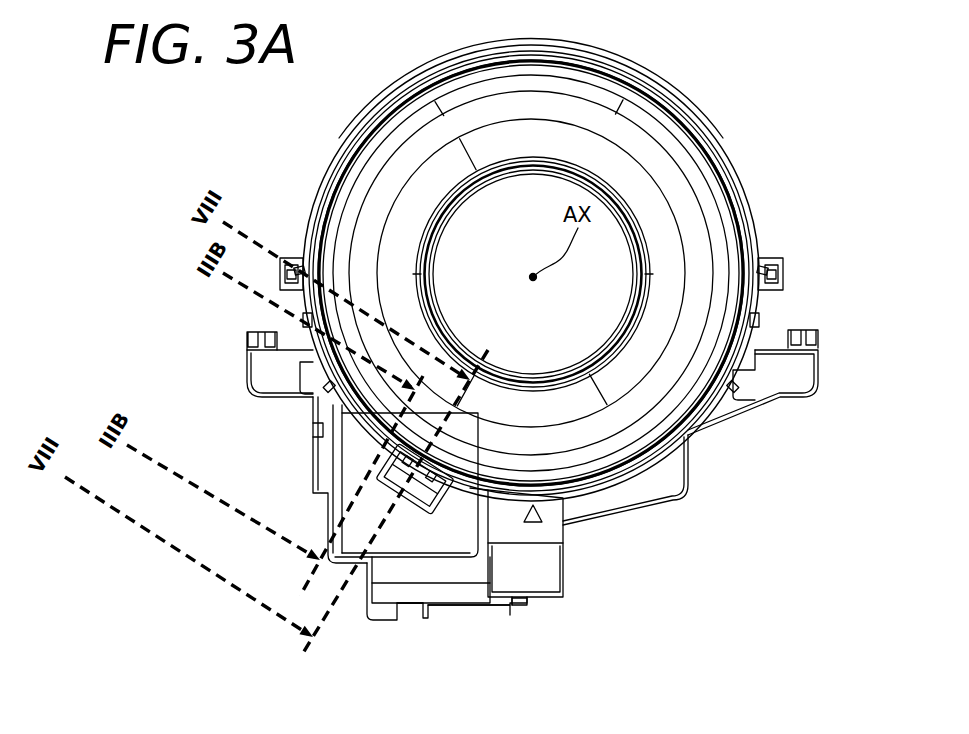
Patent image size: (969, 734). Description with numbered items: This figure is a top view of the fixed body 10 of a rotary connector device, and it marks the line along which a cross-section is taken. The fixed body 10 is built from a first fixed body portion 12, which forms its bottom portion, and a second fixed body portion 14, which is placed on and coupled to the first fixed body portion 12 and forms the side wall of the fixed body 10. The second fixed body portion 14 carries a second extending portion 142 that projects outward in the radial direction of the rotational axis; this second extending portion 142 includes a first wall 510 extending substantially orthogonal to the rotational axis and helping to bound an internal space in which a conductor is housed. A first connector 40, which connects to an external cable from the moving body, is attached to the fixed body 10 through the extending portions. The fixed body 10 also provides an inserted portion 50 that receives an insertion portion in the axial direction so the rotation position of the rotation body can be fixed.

The fixed body 10 is at (613, 270).
The first fixed body portion 12 is at (702, 193).
The second fixed body portion 14 is at (599, 273).
The first connector 40 is at (540, 577).
The inserted portion 50 is at (418, 498).
The second extending portion 142 is at (330, 468).
The first wall 510 is at (397, 533).